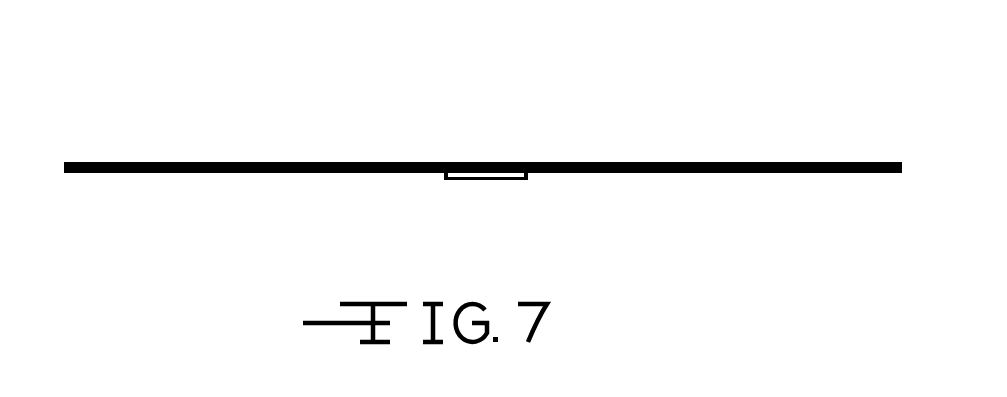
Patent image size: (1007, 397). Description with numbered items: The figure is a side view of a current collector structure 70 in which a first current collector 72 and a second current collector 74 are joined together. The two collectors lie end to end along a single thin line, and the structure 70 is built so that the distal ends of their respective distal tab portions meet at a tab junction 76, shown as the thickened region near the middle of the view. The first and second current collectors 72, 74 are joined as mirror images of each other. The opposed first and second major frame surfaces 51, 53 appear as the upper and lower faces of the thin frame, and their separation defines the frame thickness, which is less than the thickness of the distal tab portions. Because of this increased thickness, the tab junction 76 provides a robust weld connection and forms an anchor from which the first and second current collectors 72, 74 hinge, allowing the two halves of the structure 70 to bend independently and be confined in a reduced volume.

The current collector structure 70 is at (483, 150).
The first major frame surface 51 is at (190, 154).
The second major frame surface 53 is at (200, 181).
The second current collector 74 is at (263, 161).
The first current collector 72 is at (680, 162).
The tab junction 76 is at (498, 181).